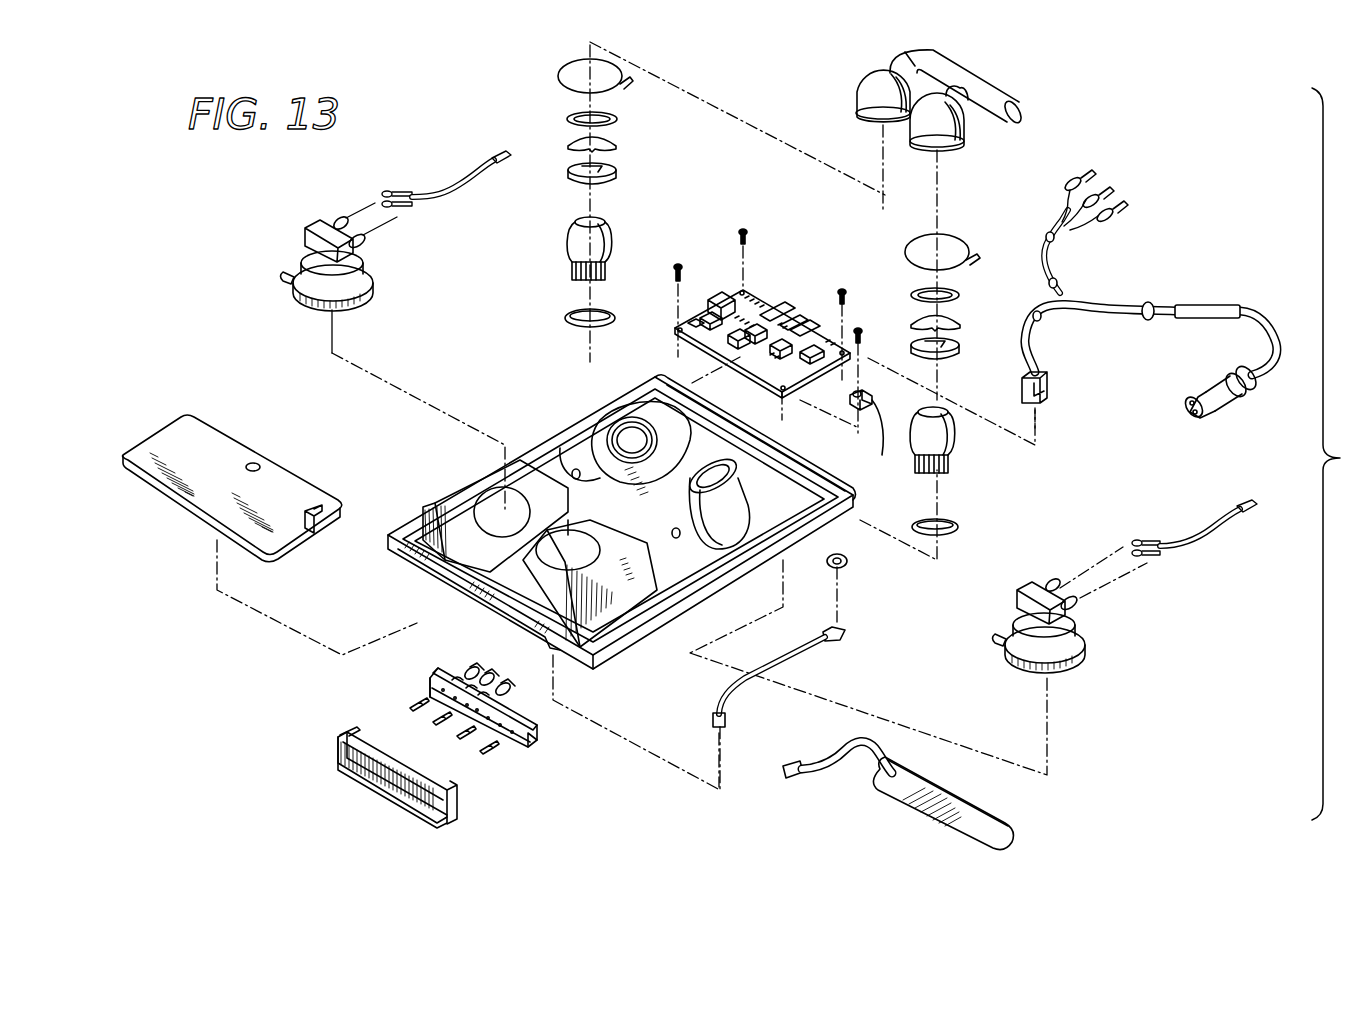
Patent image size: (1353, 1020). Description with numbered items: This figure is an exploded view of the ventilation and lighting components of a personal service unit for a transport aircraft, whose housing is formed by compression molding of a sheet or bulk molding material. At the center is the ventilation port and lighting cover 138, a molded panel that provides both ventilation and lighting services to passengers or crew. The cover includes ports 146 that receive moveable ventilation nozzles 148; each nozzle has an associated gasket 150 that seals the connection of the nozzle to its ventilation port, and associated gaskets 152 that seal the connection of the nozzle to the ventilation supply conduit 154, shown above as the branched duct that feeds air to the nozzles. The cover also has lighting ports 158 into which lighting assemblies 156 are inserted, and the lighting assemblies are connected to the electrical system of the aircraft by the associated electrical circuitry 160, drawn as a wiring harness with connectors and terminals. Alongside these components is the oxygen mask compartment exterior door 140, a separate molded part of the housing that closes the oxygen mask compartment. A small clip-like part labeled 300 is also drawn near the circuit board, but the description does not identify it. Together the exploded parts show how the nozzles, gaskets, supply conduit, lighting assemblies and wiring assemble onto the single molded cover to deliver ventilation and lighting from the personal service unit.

The ventilation port and lighting cover 138 is at (544, 640).
The oxygen mask compartment exterior door 140 is at (222, 460).
The ports 146 is at (613, 428).
The moveable ventilation nozzles 148 is at (614, 230).
The gasket 150 is at (565, 316).
The gaskets 152 is at (524, 120).
The ventilation supply conduit 154 is at (992, 76).
The lighting assemblies 156 is at (302, 262).
The lighting ports 158 is at (470, 498).
The electrical circuitry 160 is at (1202, 305).
The clip 300 is at (875, 441).